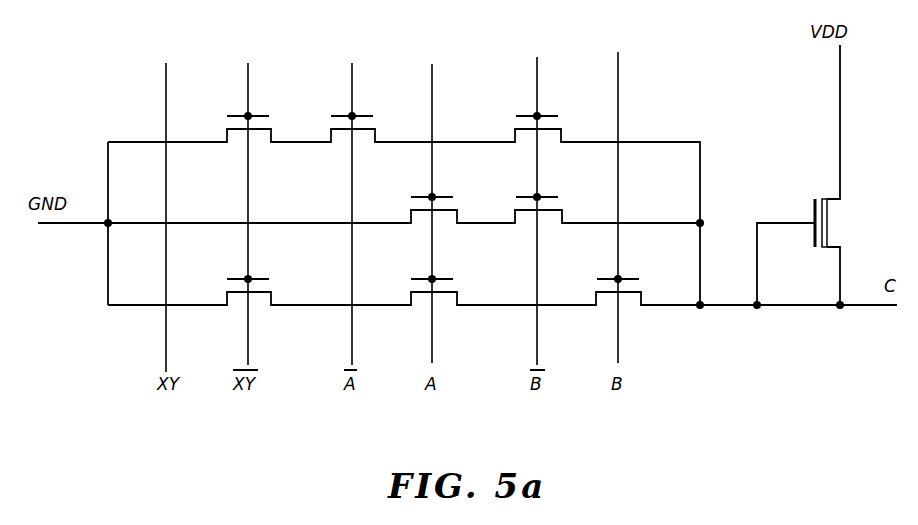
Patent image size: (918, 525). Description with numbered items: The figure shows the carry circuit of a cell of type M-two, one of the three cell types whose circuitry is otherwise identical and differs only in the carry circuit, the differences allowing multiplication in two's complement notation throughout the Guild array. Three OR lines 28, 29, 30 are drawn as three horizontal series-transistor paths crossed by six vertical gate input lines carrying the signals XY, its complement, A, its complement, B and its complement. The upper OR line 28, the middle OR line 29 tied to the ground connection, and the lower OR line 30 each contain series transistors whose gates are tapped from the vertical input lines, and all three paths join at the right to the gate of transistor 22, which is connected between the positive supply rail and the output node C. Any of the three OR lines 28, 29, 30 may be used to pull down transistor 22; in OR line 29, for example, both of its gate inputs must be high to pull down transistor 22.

The transistor 22 is at (829, 229).
The OR line 28 is at (132, 142).
The OR line 29 is at (113, 223).
The OR line 30 is at (113, 305).